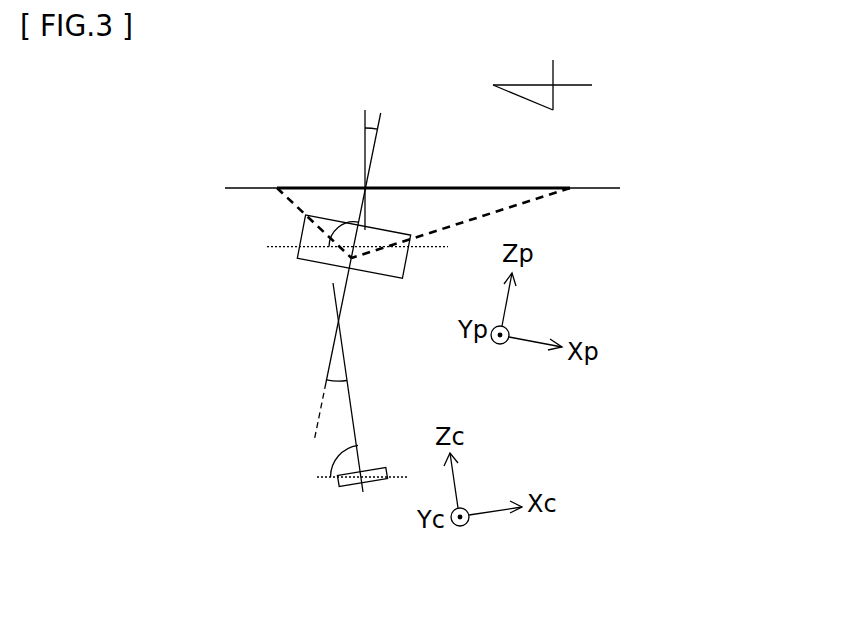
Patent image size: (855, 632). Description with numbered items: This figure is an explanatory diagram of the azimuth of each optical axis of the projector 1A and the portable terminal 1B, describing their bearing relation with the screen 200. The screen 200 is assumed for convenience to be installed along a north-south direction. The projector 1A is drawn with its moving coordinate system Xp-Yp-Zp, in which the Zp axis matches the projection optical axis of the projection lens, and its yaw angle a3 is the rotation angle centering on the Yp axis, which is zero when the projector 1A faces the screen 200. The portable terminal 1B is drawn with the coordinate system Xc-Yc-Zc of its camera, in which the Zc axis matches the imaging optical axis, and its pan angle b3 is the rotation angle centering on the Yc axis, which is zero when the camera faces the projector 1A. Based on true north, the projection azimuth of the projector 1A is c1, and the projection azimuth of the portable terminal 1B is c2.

The screen 200 is at (605, 190).
The projector 1A is at (288, 262).
The portable terminal 1B is at (335, 492).
The yaw angle a3 is at (377, 118).
The pan angle b3 is at (348, 393).
The projection azimuth of the projector c1 is at (340, 219).
The projection azimuth of the portable terminal c2 is at (330, 460).